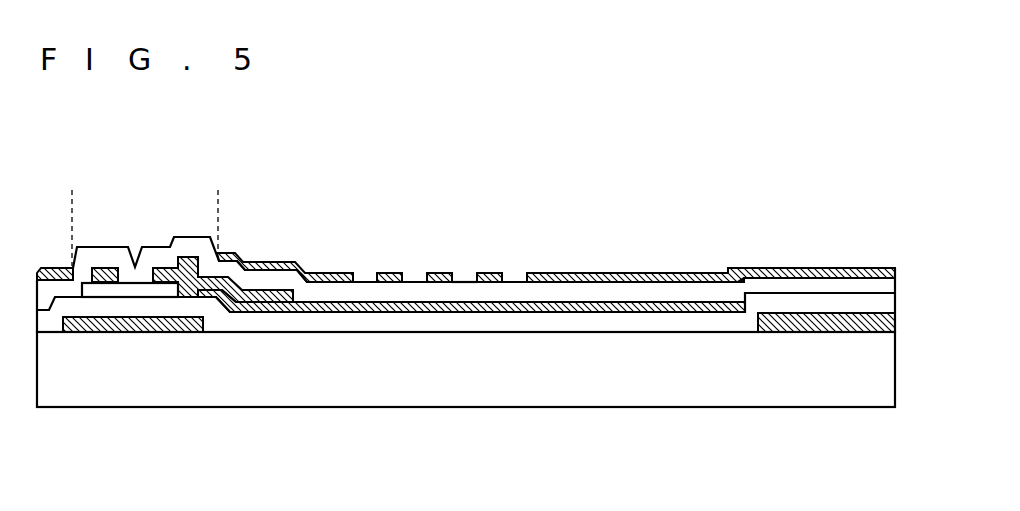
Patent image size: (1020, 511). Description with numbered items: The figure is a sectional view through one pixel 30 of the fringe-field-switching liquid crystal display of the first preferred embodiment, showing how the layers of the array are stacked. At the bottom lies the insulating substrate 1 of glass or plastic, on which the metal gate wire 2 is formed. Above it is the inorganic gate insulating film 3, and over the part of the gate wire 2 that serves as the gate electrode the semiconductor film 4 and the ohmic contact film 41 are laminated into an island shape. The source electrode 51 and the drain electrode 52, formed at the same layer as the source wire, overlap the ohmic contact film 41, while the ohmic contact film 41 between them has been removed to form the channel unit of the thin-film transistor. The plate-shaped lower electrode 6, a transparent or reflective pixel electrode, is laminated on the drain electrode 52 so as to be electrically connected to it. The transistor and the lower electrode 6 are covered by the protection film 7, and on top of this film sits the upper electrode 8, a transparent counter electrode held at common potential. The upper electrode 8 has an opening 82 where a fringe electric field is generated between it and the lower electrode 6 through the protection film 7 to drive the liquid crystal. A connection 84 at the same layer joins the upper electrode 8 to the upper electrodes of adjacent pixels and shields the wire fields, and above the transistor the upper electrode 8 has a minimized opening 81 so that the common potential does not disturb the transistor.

The insulating substrate 1 is at (413, 386).
The gate wire 2 is at (175, 333).
The gate insulating film 3 is at (480, 326).
The semiconductor film 4 is at (137, 287).
The ohmic contact film 41 is at (110, 287).
The source electrode 51 is at (108, 267).
The drain electrode 52 is at (163, 267).
The lower electrode 6 is at (313, 296).
The protection film 7 is at (413, 292).
The upper electrode 8 is at (345, 272).
The opening 81 is at (218, 190).
The opening 82 is at (463, 280).
The connection 84 is at (49, 267).
The pixel 30 is at (695, 185).